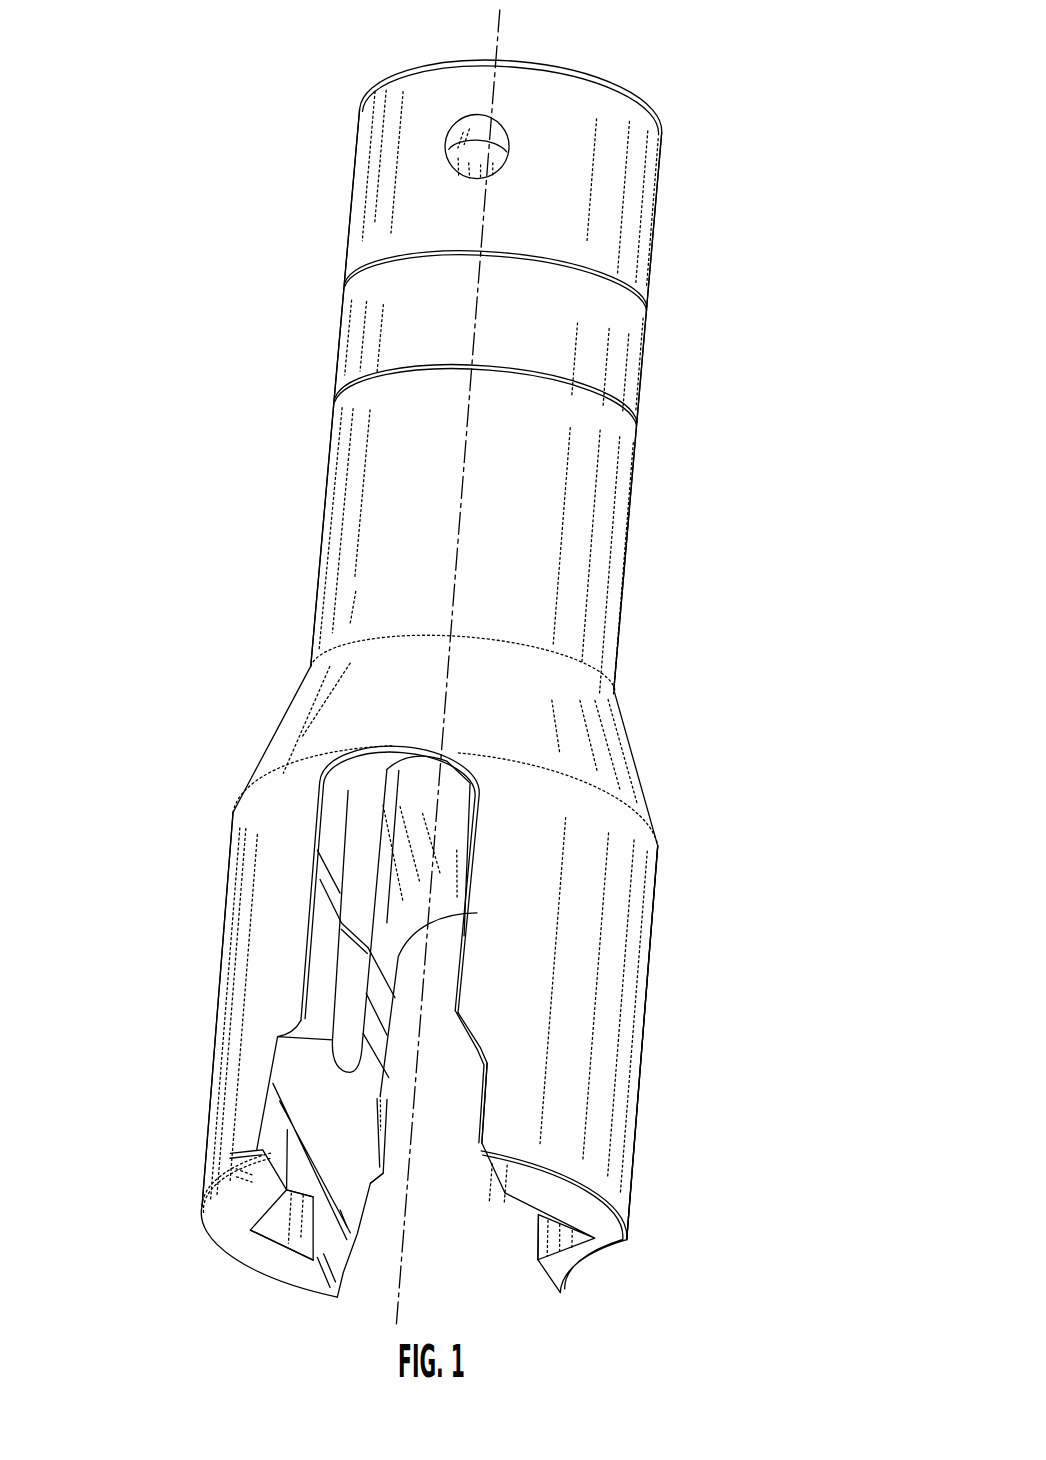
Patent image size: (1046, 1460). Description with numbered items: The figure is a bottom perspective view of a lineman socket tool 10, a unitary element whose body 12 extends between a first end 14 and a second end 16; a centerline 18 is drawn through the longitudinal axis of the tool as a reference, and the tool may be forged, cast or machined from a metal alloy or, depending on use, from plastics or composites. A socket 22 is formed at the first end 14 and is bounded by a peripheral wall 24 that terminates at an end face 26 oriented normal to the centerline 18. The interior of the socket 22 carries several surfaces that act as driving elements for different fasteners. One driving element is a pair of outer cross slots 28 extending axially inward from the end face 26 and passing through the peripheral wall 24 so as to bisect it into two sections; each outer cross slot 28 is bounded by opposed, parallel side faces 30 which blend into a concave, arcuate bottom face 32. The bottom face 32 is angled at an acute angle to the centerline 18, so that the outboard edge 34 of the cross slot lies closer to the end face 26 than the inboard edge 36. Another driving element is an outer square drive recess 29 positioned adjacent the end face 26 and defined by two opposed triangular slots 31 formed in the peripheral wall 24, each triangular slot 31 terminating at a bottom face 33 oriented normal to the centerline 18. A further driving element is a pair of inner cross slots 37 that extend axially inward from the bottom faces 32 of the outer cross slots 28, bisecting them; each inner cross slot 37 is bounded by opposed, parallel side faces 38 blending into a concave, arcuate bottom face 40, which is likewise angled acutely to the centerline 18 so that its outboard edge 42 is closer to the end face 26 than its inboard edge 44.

The socket tool 10 is at (751, 341).
The body 12 is at (610, 537).
The first end 14 is at (652, 1232).
The second end 16 is at (652, 58).
The centerline 18 is at (509, 33).
The socket 22 is at (585, 952).
The peripheral wall 24 is at (580, 1176).
The end face 26 is at (582, 1268).
The outer cross slots 28 is at (521, 1074).
The outer square drive recess 29 is at (526, 1226).
The side faces 30 is at (270, 1100).
The triangular slots 31 is at (278, 1232).
The bottom face 32 is at (295, 1030).
The bottom face 33 is at (297, 1180).
The outboard edge 34 is at (345, 1247).
The inboard edge 36 is at (353, 1171).
The inner cross slots 37 is at (462, 875).
The side faces 38 is at (302, 930).
The bottom face 40 is at (350, 752).
The outboard edge 42 is at (303, 862).
The inboard edge 44 is at (357, 850).